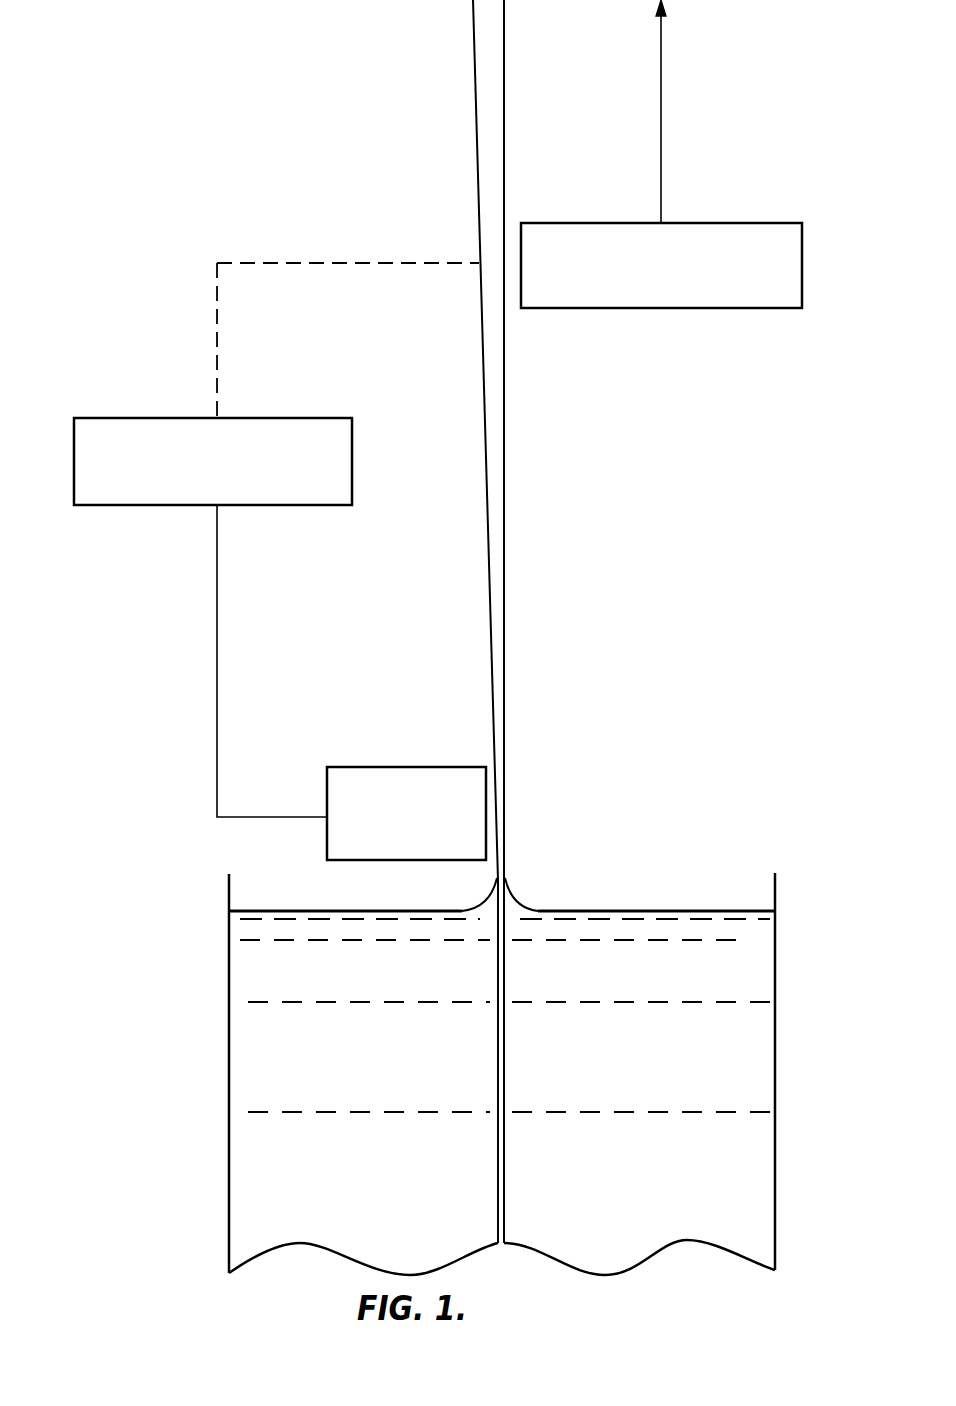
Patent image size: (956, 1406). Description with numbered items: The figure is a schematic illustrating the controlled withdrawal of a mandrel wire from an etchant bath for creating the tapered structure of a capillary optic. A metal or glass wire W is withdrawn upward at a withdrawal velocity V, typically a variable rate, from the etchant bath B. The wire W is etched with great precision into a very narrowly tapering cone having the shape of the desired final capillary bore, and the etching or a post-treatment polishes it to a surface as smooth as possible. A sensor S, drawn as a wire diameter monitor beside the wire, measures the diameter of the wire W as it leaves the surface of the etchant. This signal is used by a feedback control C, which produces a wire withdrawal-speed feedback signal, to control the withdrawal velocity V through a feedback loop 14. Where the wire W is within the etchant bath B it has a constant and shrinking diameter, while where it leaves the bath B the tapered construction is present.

The feedback loop 14 is at (214, 274).
The feedback control C is at (127, 418).
The withdrawal velocity V is at (662, 138).
The sensor S is at (450, 767).
The etchant bath B is at (305, 910).
The metal or glass wire W is at (504, 878).